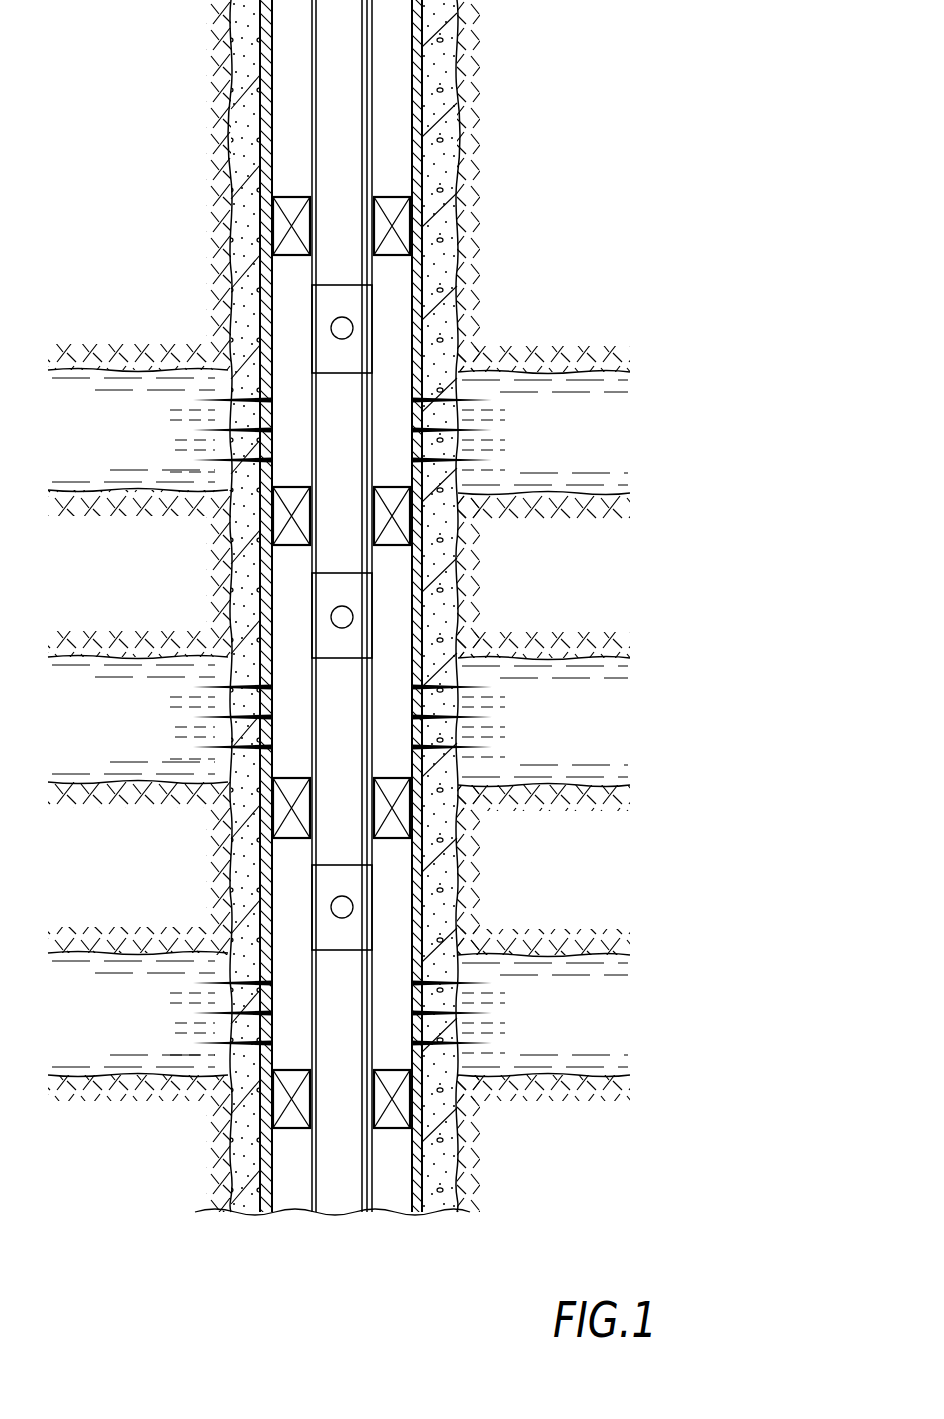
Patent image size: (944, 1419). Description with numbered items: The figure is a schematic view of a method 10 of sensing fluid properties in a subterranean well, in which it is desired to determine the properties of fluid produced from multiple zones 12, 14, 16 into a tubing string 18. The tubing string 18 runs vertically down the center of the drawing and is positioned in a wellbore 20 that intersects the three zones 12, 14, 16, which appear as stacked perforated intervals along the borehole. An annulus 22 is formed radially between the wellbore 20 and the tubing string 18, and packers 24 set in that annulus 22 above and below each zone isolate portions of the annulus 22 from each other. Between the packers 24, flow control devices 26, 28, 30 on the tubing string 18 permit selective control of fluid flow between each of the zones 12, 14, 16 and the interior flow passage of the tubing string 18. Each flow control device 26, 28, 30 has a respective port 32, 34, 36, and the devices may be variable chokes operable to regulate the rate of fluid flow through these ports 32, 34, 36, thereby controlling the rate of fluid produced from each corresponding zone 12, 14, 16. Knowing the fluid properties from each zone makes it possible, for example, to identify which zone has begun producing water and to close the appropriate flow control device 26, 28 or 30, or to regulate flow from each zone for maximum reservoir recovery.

The method 10 is at (597, 60).
The zone 12 is at (590, 405).
The zone 14 is at (590, 708).
The zone 16 is at (596, 1002).
The tubing string 18 is at (380, 127).
The wellbore 20 is at (282, 118).
The annulus 22 is at (285, 160).
The packers 24 is at (393, 199).
The flow control device 26 is at (308, 318).
The flow control device 28 is at (310, 605).
The flow control device 30 is at (310, 897).
The port 32 is at (350, 328).
The port 34 is at (350, 615).
The port 36 is at (350, 908).